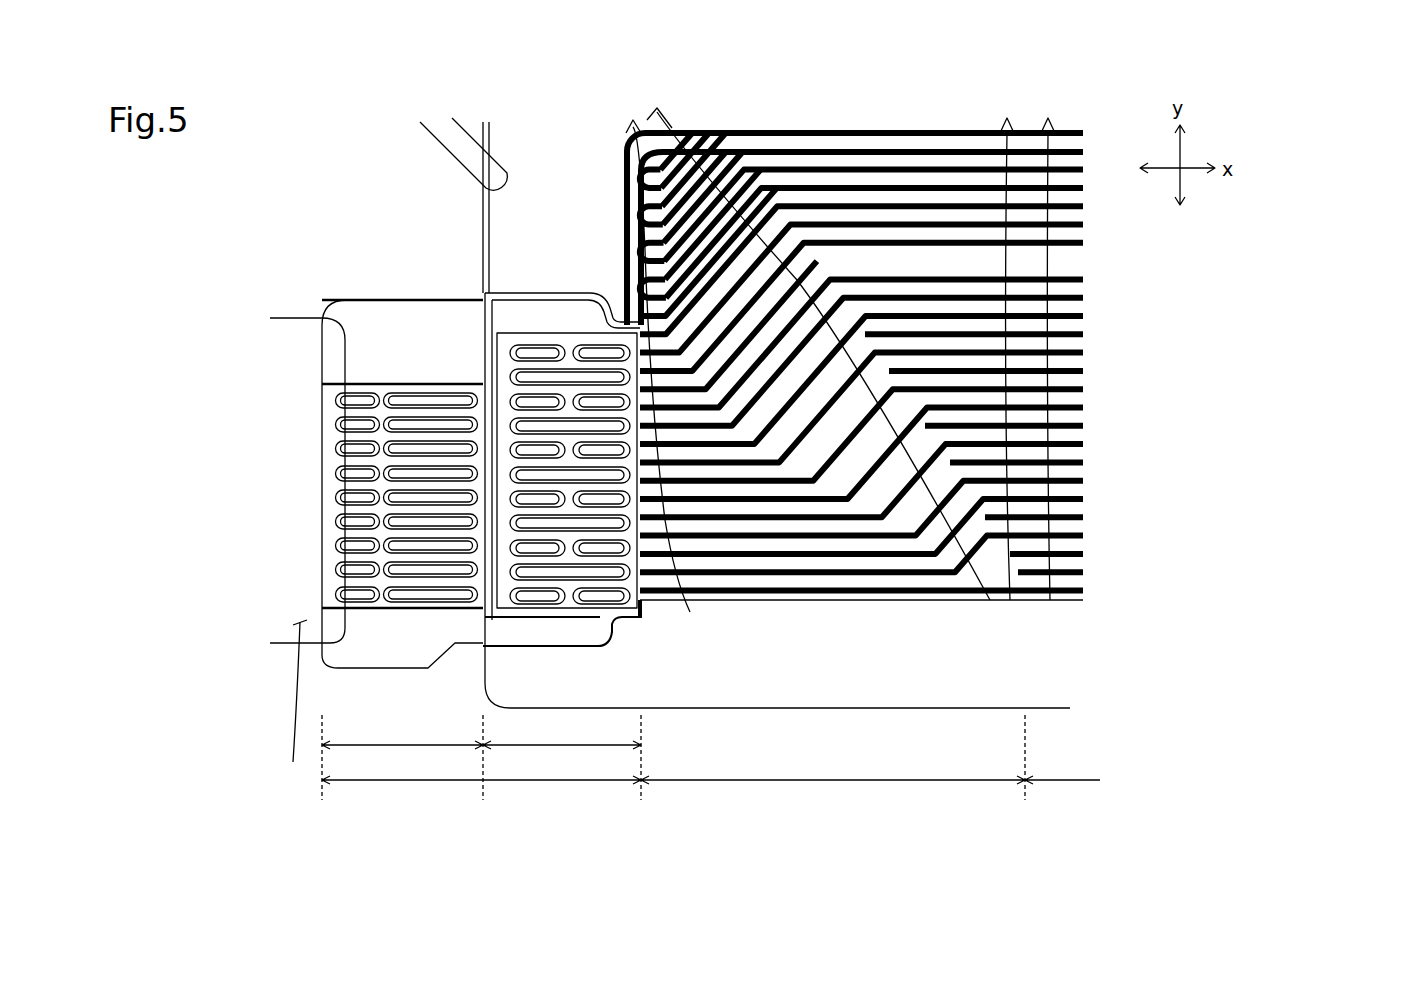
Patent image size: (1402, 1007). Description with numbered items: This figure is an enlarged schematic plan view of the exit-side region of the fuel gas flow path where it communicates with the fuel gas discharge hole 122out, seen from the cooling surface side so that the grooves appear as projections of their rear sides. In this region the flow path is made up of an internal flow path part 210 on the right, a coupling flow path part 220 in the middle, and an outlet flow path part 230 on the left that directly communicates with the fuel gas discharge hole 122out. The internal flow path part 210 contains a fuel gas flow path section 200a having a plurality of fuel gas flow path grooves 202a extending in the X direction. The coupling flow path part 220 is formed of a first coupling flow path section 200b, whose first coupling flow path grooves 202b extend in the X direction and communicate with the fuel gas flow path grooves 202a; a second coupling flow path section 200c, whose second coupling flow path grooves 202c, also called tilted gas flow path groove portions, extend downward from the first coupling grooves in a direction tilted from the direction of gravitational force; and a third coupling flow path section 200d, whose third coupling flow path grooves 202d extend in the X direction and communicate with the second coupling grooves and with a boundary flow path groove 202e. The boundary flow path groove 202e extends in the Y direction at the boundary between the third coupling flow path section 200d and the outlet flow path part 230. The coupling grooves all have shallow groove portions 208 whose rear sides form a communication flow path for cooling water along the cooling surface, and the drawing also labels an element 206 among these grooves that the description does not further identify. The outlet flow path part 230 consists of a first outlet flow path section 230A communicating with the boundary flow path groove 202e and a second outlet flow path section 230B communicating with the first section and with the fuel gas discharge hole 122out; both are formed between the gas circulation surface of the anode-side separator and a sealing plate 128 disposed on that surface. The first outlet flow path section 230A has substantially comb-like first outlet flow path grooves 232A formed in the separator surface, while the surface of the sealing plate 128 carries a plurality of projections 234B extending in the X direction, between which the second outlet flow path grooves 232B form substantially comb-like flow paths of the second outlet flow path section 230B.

The fuel gas flow path section 200a is at (1048, 118).
The first coupling flow path section 200b is at (1007, 118).
The second coupling flow path section 200c is at (657, 108).
The third coupling flow path section 200d is at (633, 120).
The fuel gas flow path grooves 202a is at (1082, 130).
The first coupling flow path grooves 202b is at (903, 130).
The second coupling flow path grooves 202c is at (750, 150).
The third coupling flow path grooves 202d is at (832, 580).
The boundary flow path groove 202e is at (634, 585).
The partition wall 206 is at (850, 130).
The shallow groove portions 208 is at (808, 130).
The first outlet flow path grooves 232A is at (572, 350).
The second outlet flow path grooves 232B is at (437, 437).
The projections 234B is at (405, 405).
The sealing plate 128 is at (322, 372).
The fuel gas discharge hole 122out is at (263, 702).
The outlet flow path part 230 is at (481, 812).
The first outlet flow path section 230A is at (562, 757).
The second outlet flow path section 230B is at (402, 757).
The coupling flow path part 220 is at (833, 781).
The internal flow path part 210 is at (1188, 812).